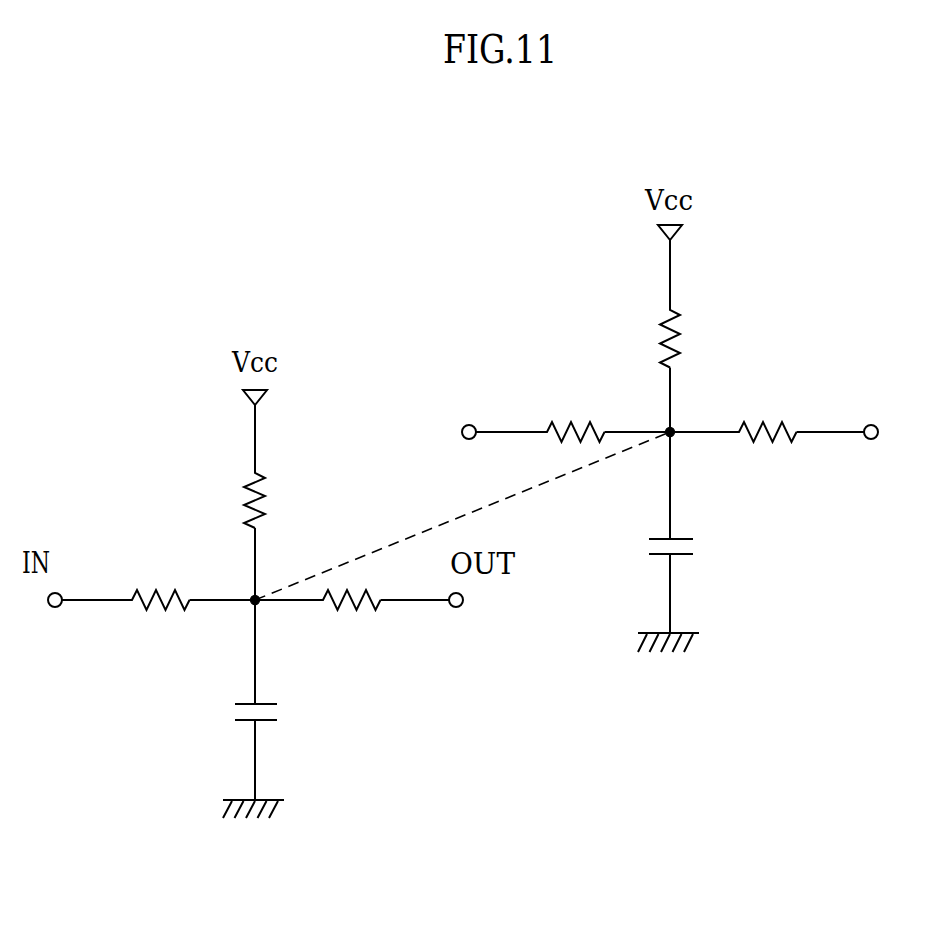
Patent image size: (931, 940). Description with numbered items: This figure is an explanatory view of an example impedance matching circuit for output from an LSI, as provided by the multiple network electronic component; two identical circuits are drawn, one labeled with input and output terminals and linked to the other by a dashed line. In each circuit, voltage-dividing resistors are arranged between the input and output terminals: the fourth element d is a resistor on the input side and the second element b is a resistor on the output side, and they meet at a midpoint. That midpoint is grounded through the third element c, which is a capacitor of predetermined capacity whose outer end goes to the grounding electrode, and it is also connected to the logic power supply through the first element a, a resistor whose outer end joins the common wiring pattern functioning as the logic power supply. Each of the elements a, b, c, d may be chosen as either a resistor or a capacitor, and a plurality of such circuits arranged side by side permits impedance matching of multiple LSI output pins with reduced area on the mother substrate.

The first element a is at (475, 417).
The second element b is at (559, 534).
The third element c is at (470, 614).
The fourth element d is at (367, 501).